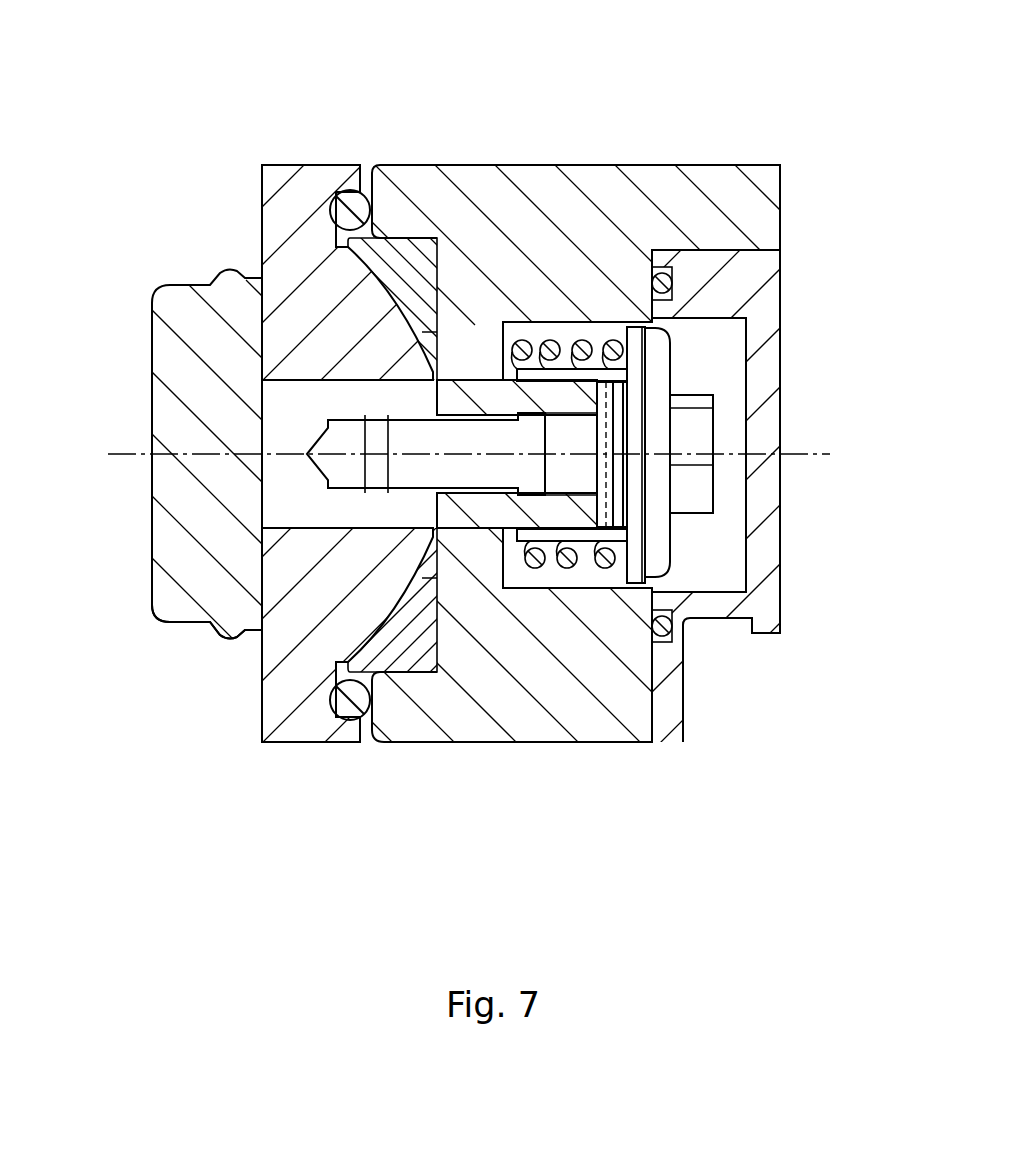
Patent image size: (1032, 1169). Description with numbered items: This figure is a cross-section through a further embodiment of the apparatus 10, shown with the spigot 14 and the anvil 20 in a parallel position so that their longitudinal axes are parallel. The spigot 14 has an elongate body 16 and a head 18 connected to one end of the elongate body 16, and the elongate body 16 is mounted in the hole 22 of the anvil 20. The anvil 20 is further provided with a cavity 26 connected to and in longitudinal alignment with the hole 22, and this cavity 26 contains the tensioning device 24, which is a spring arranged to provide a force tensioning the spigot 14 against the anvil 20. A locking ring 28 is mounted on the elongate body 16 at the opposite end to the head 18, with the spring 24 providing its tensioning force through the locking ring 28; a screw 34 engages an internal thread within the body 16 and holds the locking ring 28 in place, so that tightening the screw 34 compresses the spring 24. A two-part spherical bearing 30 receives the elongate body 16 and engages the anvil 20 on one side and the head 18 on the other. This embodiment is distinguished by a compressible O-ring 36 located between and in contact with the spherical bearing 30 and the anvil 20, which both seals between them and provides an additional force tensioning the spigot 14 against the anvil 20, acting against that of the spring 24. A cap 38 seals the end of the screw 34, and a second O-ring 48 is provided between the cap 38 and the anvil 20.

The apparatus 10 is at (244, 129).
The spigot 14 is at (160, 400).
The elongate body 16 is at (318, 396).
The head 18 is at (178, 565).
The anvil 20 is at (566, 165).
The hole 22 is at (455, 535).
The tensioning device 24 is at (568, 577).
The cavity 26 is at (595, 318).
The locking ring 28 is at (662, 540).
The two-part spherical bearing 30 is at (311, 166).
The screw 34 is at (714, 410).
The O-ring 36 is at (348, 708).
The cap 38 is at (781, 296).
The second O-ring 48 is at (668, 635).